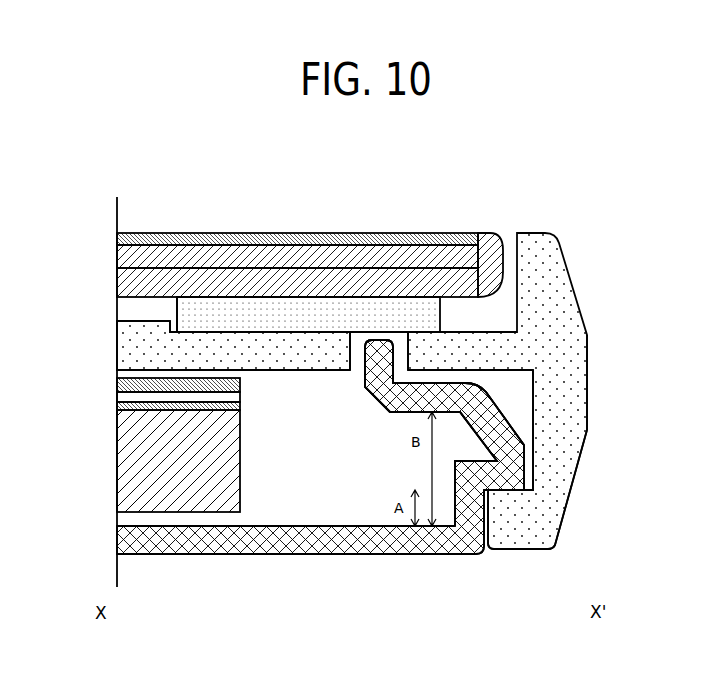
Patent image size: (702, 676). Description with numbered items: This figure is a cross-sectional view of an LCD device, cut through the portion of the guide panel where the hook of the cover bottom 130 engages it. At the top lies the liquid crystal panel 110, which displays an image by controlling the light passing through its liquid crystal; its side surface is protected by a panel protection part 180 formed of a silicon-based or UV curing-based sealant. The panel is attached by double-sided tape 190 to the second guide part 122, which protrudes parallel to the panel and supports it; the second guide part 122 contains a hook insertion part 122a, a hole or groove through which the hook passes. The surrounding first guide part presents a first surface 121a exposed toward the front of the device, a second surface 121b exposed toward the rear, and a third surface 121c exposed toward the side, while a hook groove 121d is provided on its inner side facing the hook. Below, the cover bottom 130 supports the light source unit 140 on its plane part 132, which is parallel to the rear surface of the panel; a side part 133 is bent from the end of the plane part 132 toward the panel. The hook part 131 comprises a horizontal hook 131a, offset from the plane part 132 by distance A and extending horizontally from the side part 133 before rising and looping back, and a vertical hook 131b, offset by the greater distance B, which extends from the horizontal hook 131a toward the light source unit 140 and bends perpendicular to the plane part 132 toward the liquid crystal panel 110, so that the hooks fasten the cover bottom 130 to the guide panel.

The liquid crystal panel 110 is at (188, 258).
The second guide part 122 is at (240, 353).
The hook insertion part 122a is at (360, 338).
The panel protection part 180 is at (484, 250).
The first surface 121a is at (544, 232).
The second surface 121b is at (540, 548).
The third surface 121c is at (590, 367).
The hook groove 121d is at (523, 422).
The double-sided tape 190 is at (175, 325).
The light source unit 140 is at (108, 378).
The cover bottom 130 is at (320, 501).
The hook part 131 is at (438, 484).
The horizontal hook 131a is at (447, 550).
The vertical hook 131b is at (368, 550).
The plane part 132 is at (340, 556).
The side part 133 is at (489, 537).